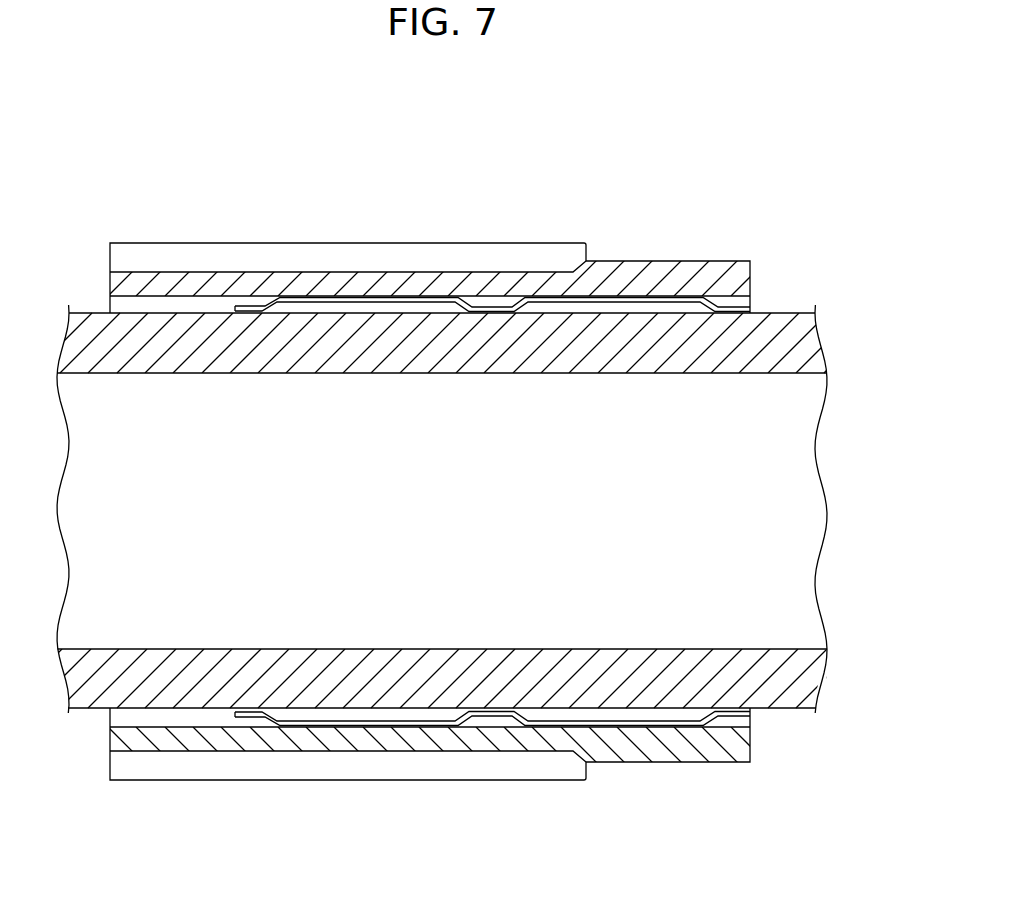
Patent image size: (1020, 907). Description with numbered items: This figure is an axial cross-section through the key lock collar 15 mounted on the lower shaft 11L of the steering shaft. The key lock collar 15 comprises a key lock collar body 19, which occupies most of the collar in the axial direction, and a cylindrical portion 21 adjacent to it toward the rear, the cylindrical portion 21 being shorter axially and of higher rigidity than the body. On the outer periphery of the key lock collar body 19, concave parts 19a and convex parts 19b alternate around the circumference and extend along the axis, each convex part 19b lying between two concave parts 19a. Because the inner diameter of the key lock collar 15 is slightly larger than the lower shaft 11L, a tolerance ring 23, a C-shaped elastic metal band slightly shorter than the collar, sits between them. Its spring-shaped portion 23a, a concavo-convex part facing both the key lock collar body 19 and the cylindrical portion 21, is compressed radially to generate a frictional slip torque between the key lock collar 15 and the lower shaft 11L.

The lower shaft 11L is at (781, 695).
The key lock collar 15 is at (655, 157).
The key lock collar body 19 is at (437, 512).
The concave part 19a is at (221, 272).
The convex part 19b is at (310, 243).
The cylindrical portion 21 is at (660, 260).
The tolerance ring 23 is at (492, 571).
The spring-shaped portion 23a is at (563, 727).